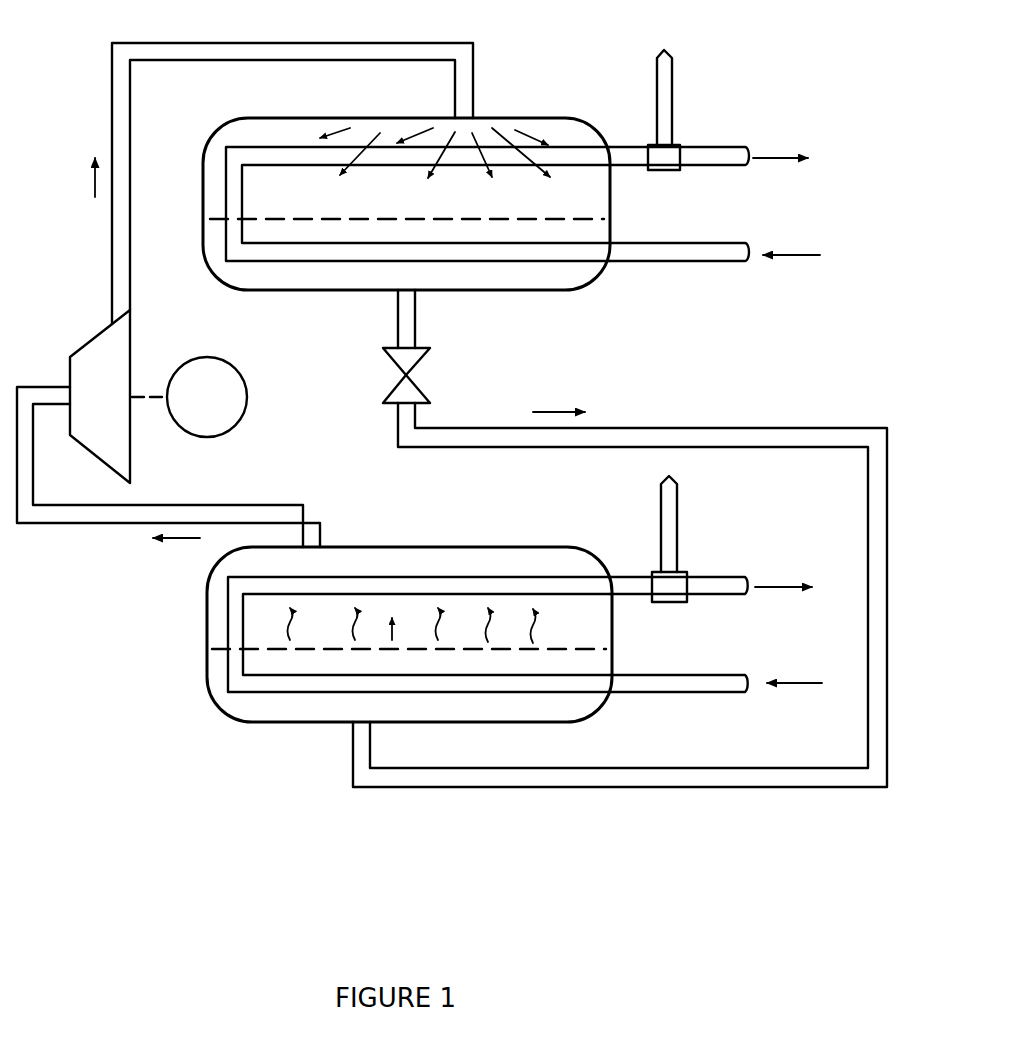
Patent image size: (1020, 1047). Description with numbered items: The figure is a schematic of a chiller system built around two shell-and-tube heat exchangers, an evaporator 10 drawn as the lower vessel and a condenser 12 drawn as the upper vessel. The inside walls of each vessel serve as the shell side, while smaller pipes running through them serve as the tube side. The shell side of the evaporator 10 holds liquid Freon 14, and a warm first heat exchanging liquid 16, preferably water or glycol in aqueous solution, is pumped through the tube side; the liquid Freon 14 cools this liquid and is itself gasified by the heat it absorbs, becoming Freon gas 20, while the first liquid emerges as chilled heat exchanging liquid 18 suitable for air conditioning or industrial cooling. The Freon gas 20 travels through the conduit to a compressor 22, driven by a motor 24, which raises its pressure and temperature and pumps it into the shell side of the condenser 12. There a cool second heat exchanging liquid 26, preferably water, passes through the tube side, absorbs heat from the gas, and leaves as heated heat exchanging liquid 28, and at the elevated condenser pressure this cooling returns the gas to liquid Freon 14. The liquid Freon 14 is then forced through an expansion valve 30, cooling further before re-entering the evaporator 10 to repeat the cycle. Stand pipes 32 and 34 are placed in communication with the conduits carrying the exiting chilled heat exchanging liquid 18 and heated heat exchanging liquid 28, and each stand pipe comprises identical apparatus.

The evaporator 10 is at (393, 545).
The condenser 12 is at (313, 293).
The liquid Freon 14 is at (528, 272).
The first heat exchanging liquid 16 is at (722, 694).
The chilled heat exchanging liquid 18 is at (722, 598).
The Freon gas 20 is at (278, 43).
The compressor 22 is at (97, 336).
The motor 24 is at (220, 411).
The second heat exchanging liquid 26 is at (722, 263).
The heated heat exchanging liquid 28 is at (722, 167).
The expansion valve 30 is at (423, 392).
The stand pipe 32 is at (677, 512).
The stand pipe 34 is at (672, 88).